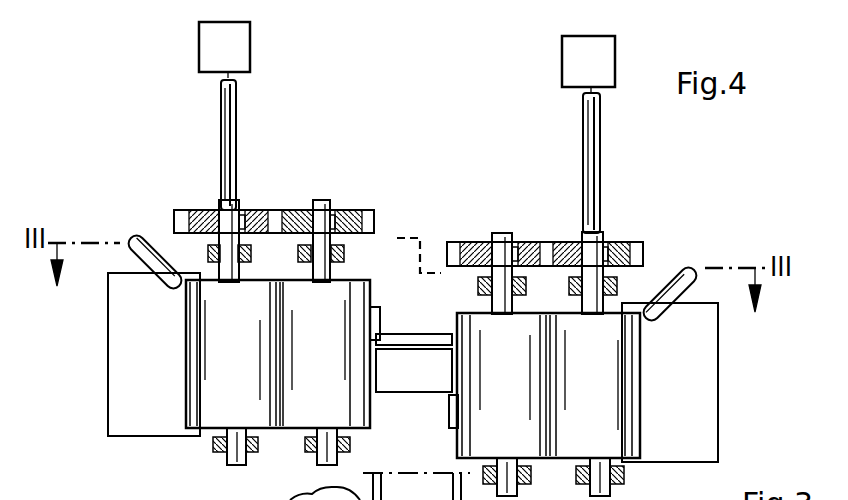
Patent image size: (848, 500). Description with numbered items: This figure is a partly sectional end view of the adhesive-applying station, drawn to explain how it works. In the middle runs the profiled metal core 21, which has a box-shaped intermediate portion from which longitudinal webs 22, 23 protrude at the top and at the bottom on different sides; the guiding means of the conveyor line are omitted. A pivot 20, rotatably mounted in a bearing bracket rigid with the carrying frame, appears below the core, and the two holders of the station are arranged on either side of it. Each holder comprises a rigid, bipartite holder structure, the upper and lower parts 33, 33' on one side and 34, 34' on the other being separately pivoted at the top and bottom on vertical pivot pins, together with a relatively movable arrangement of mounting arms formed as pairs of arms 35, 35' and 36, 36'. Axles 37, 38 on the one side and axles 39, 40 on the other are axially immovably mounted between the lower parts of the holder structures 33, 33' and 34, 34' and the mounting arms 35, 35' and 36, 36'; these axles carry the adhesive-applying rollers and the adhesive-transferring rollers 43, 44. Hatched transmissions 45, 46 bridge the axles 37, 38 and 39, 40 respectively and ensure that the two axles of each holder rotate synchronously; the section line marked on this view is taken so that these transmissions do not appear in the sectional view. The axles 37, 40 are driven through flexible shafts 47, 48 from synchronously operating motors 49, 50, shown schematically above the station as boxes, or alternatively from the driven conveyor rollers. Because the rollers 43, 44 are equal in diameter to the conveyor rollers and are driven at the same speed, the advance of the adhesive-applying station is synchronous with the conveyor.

The pivot 20 is at (416, 486).
The profiled metal core 21 is at (407, 383).
The longitudinal web 22 is at (374, 329).
The longitudinal web 23 is at (452, 412).
The rigid holder structure 33 is at (212, 254).
The rigid holder structure 33' is at (210, 457).
The rigid holder structure 34 is at (576, 288).
The rigid holder structure 34' is at (621, 479).
The mounting arm 35 is at (302, 254).
The mounting arm 35' is at (305, 457).
The mounting arm 36 is at (488, 288).
The mounting arm 36' is at (529, 479).
The axle 37 is at (222, 203).
The axle 38 is at (329, 206).
The axle 39 is at (492, 235).
The axle 40 is at (597, 237).
The adhesive-transferring roller 43 is at (353, 298).
The adhesive-transferring roller 44 is at (467, 327).
The transmission 45 is at (253, 221).
The transmission 46 is at (523, 246).
The flexible shaft 47 is at (229, 128).
The flexible shaft 48 is at (584, 126).
The motor 49 is at (243, 48).
The motor 50 is at (562, 56).